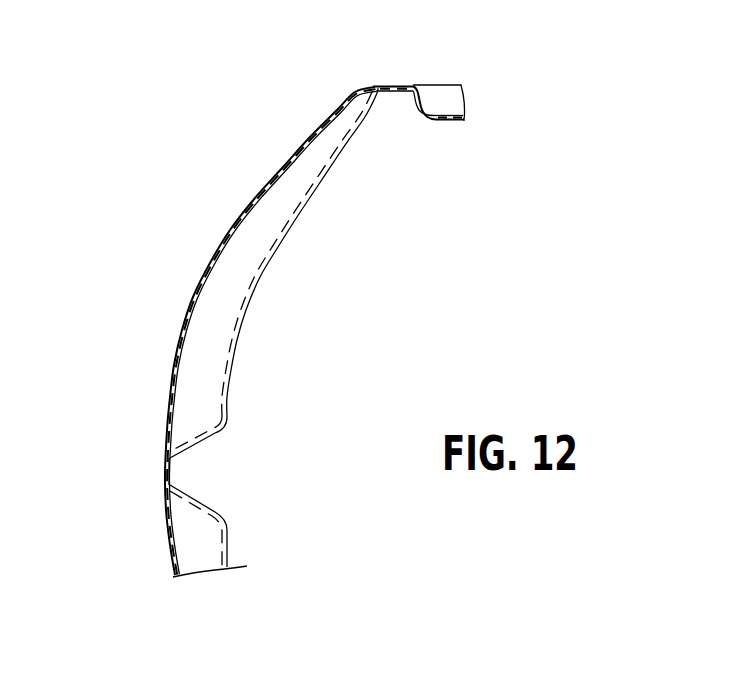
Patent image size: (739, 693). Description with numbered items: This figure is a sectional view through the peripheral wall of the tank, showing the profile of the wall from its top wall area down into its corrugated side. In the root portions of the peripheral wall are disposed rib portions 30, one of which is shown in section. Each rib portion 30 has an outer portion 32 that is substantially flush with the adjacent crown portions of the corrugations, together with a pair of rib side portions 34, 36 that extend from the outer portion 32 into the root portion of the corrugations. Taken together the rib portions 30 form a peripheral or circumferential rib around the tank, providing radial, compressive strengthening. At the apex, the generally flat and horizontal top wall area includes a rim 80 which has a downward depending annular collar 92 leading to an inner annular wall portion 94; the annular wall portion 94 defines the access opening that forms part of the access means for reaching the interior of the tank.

The rib portion 30 is at (190, 429).
The outer portion 32 is at (170, 473).
The rib side portion 34 is at (207, 437).
The rib side portion 36 is at (207, 505).
The rim 80 is at (398, 87).
The annular collar 92 is at (425, 105).
The inner annular wall portion 94 is at (440, 121).